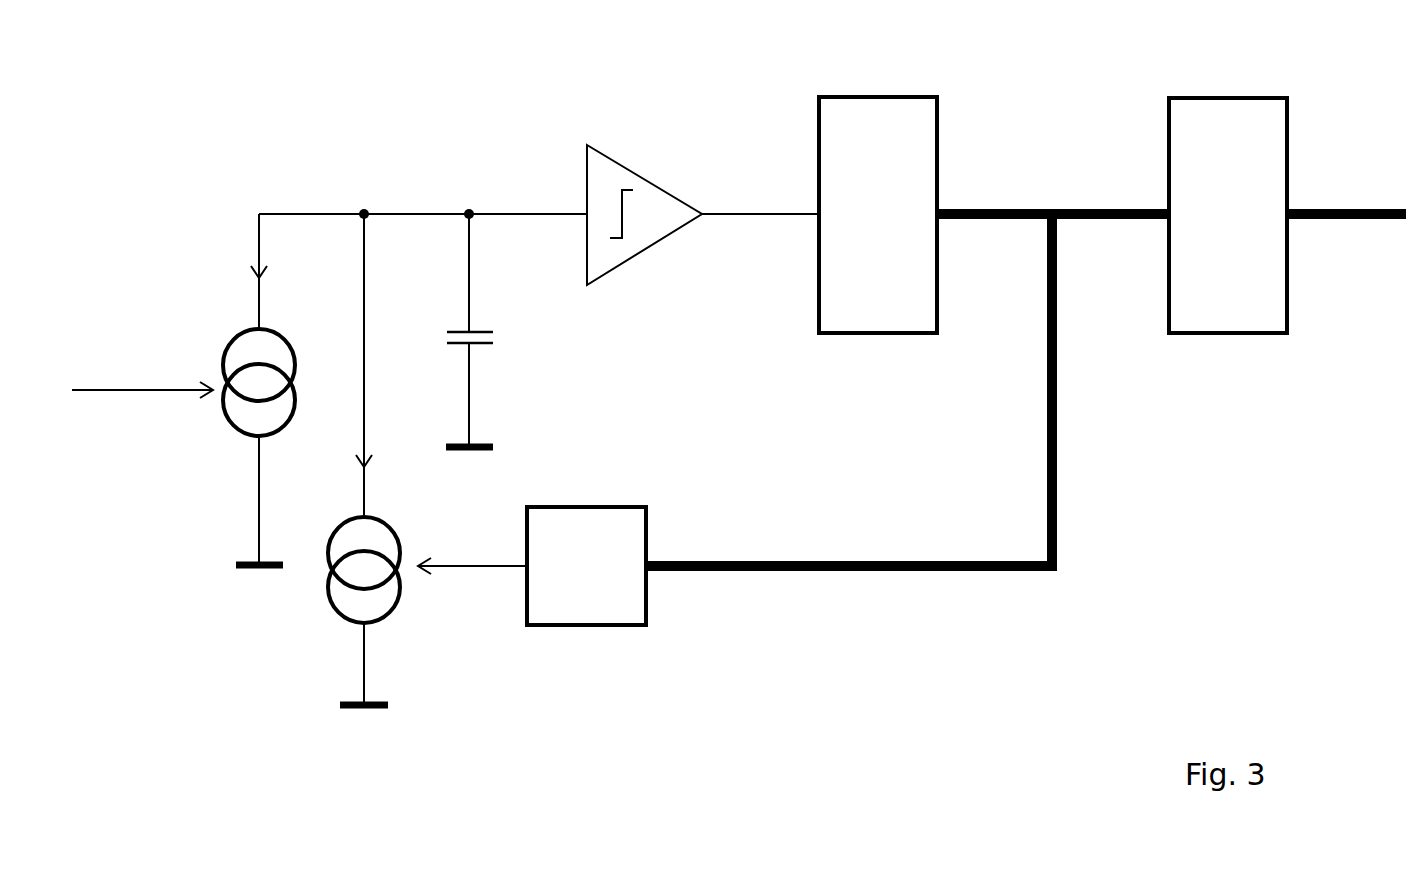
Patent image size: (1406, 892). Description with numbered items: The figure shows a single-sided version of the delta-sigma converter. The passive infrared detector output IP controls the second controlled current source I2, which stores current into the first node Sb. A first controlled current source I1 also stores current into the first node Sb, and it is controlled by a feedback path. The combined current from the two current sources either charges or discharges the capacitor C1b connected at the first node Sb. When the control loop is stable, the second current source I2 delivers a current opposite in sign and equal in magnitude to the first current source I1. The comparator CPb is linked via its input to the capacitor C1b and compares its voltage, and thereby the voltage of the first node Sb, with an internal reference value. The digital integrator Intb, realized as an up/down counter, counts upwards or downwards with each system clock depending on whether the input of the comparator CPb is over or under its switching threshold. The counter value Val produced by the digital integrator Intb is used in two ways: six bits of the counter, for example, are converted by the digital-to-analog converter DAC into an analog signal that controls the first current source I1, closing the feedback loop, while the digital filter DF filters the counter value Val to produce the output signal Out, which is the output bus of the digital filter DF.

The passive infrared detector output IP is at (142, 369).
The second controlled current source I2 is at (272, 389).
The first controlled current source I1 is at (366, 459).
The first node Sb is at (416, 193).
The capacitor C1b is at (498, 330).
The comparator CPb is at (703, 200).
The digital integrator Intb is at (878, 215).
The counter value Val is at (907, 401).
The digital filter DF is at (1228, 215).
The output signal Out is at (1346, 238).
The digital-to-analog converter DAC is at (532, 566).